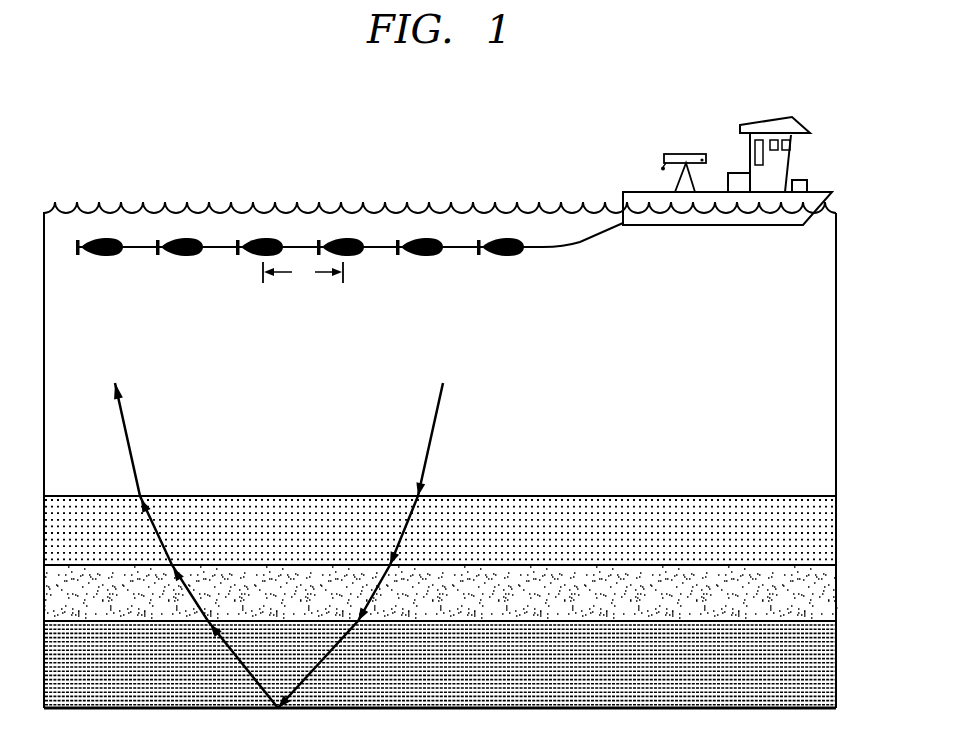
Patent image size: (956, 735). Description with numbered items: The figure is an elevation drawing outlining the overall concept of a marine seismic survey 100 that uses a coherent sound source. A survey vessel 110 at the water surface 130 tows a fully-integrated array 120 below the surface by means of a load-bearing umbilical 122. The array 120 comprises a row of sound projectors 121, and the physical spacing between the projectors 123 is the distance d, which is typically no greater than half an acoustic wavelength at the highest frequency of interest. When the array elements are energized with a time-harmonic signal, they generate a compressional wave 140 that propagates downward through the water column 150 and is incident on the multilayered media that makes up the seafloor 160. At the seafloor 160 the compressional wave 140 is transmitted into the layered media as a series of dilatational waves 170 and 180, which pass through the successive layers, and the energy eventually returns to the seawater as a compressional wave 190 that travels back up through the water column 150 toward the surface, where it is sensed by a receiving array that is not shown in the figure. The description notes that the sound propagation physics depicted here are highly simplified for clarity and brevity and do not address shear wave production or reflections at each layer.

The marine seismic survey 100 is at (450, 92).
The survey vessel 110 is at (735, 226).
The fully-integrated array 120 is at (309, 213).
The sound projectors 121 is at (356, 248).
The load-bearing umbilical 122 is at (547, 249).
The physical spacing between the projectors 123 is at (293, 286).
The water surface 130 is at (441, 200).
The compressional wave 140 is at (432, 435).
The water column 150 is at (836, 364).
The seafloor 160 is at (690, 643).
The dilatational waves 170 is at (320, 658).
The dilatational waves 180 is at (240, 658).
The compressional wave 190 is at (128, 438).